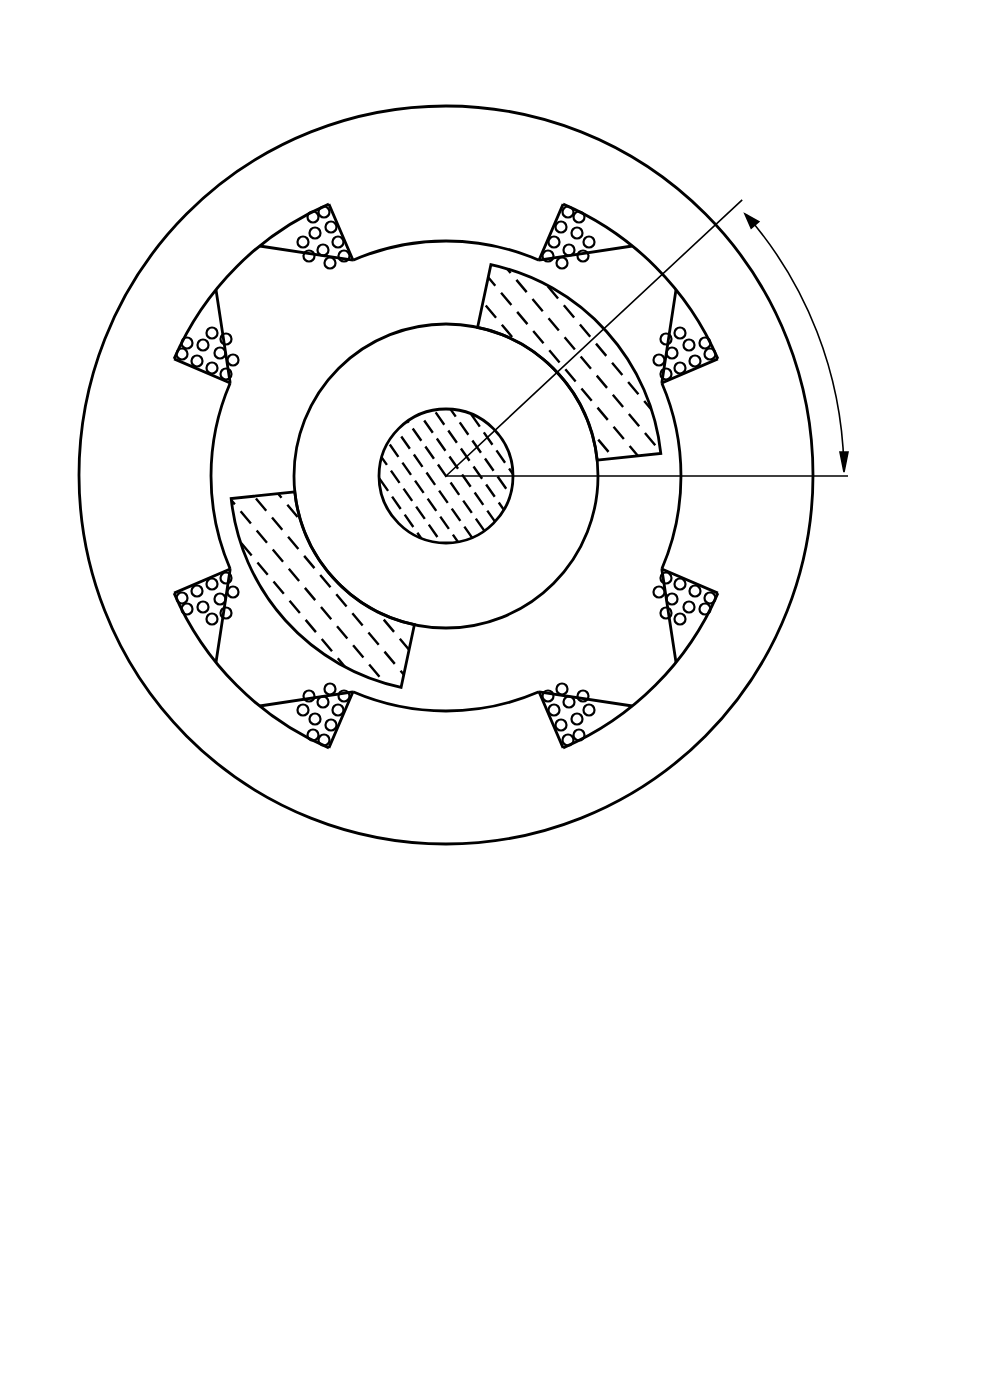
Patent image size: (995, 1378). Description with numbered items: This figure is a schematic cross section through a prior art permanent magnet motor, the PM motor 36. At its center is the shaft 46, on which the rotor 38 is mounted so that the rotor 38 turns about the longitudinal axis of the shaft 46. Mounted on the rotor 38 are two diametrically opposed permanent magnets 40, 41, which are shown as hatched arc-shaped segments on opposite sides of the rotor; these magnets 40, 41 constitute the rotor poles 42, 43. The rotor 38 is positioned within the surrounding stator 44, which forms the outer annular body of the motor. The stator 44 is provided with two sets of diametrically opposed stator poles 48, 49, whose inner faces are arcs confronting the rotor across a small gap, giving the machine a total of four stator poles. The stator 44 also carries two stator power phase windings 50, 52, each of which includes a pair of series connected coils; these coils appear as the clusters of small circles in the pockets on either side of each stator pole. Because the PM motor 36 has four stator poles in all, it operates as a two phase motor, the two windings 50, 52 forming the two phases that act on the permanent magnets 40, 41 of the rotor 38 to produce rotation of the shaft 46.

The PM motor 36 is at (262, 995).
The rotor 38 is at (473, 540).
The permanent magnet 40 is at (447, 470).
The permanent magnet 41 is at (265, 498).
The rotor pole 42 is at (642, 457).
The rotor pole 43 is at (417, 634).
The stator 44 is at (134, 501).
The shaft 46 is at (493, 632).
The stator pole 48 is at (380, 250).
The stator pole 49 is at (220, 506).
The stator power phase winding 50 is at (263, 243).
The stator power phase winding 52 is at (218, 330).